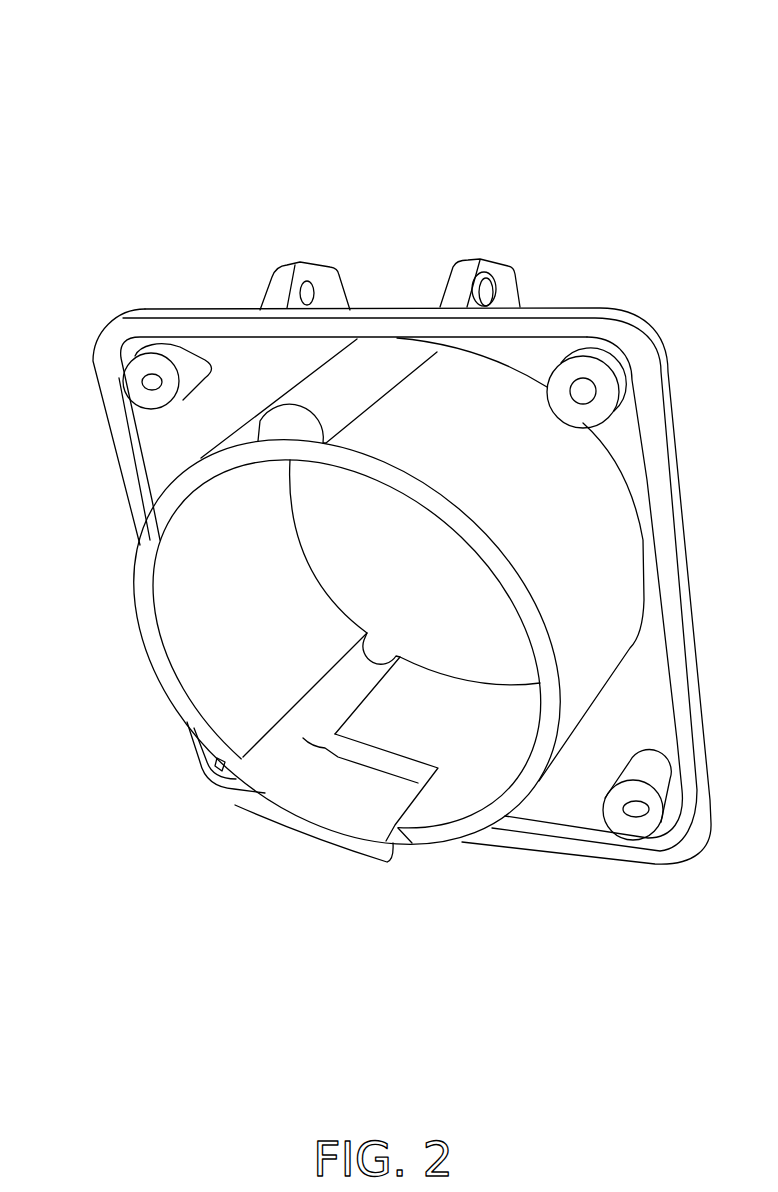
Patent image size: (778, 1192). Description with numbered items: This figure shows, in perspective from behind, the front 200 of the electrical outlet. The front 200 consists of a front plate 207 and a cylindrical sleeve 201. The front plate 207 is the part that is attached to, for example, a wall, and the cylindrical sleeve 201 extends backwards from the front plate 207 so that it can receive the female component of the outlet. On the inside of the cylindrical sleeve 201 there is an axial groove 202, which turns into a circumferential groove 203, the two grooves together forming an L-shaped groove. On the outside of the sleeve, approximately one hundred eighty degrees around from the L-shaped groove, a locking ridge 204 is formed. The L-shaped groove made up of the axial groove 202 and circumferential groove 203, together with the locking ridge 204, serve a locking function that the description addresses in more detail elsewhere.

The front 200 is at (385, 522).
The cylindrical sleeve 201 is at (210, 670).
The axial groove 202 is at (311, 710).
The circumferential groove 203 is at (372, 806).
The locking ridge 204 is at (353, 360).
The front plate 207 is at (640, 310).